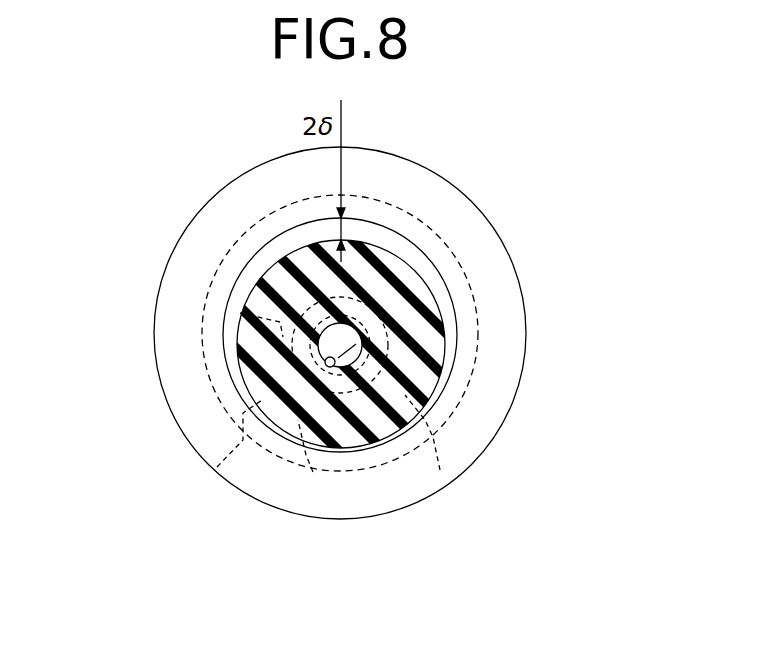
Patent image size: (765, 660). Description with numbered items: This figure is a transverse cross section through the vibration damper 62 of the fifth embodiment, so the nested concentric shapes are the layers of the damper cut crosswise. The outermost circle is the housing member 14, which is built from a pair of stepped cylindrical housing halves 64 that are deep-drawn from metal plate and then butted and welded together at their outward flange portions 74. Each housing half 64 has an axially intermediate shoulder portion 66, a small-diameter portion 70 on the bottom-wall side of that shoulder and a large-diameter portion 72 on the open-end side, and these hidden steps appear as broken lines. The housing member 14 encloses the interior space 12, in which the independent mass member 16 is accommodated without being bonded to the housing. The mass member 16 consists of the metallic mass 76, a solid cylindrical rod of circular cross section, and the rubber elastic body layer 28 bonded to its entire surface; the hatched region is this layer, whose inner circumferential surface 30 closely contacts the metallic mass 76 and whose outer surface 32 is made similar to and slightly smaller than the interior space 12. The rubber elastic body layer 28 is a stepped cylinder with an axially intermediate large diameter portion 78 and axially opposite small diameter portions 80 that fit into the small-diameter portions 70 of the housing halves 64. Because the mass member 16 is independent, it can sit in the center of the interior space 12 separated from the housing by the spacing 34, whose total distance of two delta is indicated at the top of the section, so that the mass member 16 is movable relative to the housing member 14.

The housing member 14 is at (203, 204).
The housing half 64 is at (302, 331).
The vibration damper 62 is at (302, 297).
The outward flange portion 74 is at (500, 312).
The spacing 34 is at (363, 233).
The interior space 12 is at (389, 269).
The mass member 16 is at (351, 283).
The rubber elastic body layer 28 is at (420, 375).
The metallic mass 76 is at (326, 352).
The inner circumferential surface 30 is at (340, 365).
The outer surface 32 is at (255, 290).
The large diameter portion 78 is at (250, 340).
The small-diameter portion 70 is at (215, 302).
The small diameter portion 80 is at (217, 467).
The shoulder portion 66 is at (313, 472).
The large-diameter portion 72 is at (440, 470).